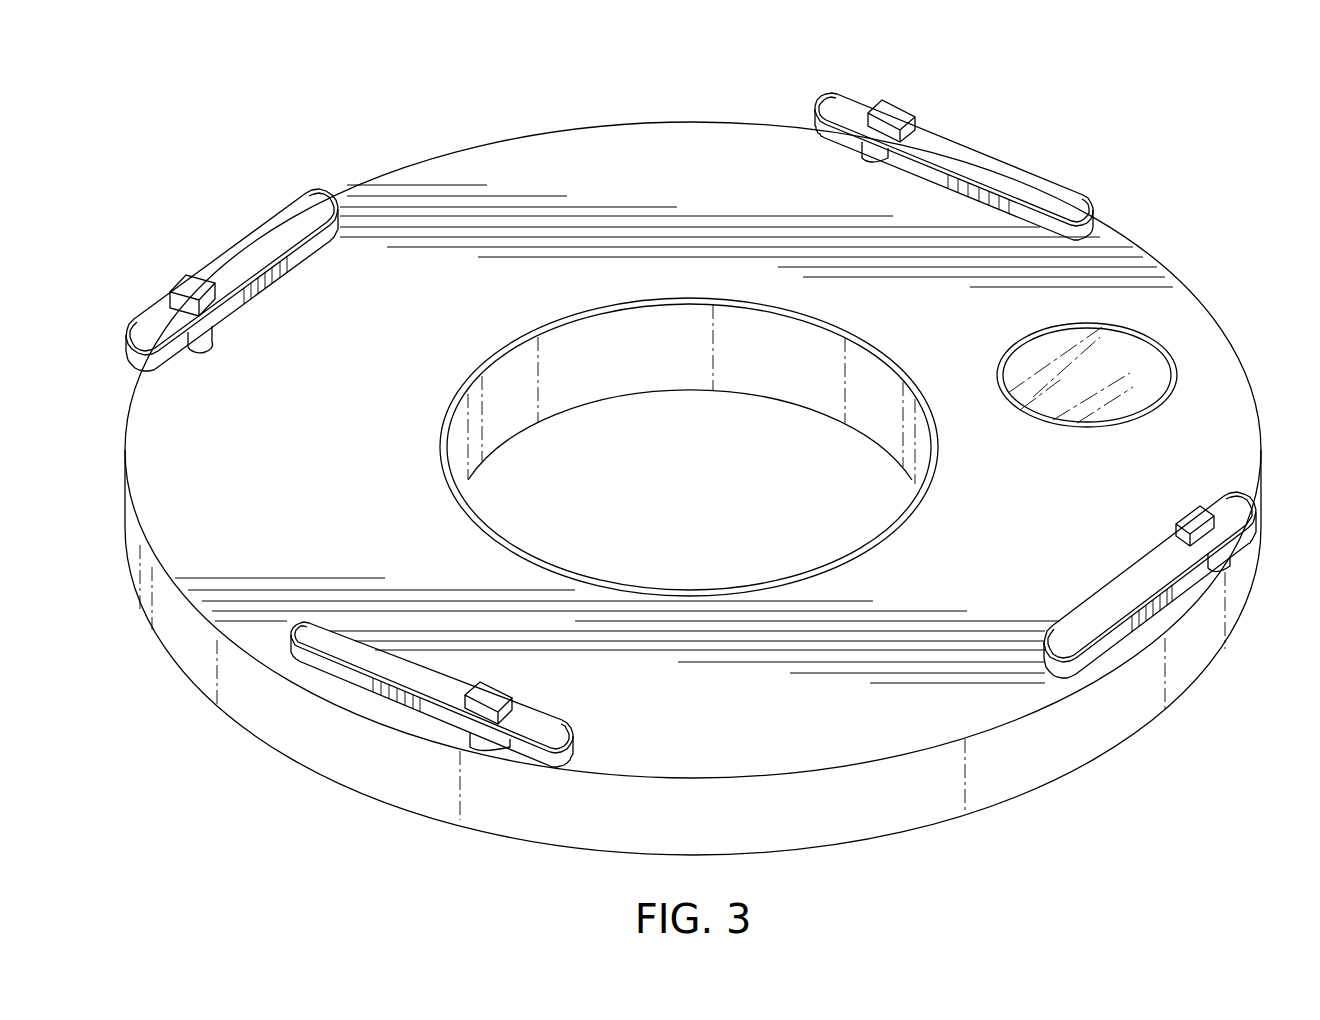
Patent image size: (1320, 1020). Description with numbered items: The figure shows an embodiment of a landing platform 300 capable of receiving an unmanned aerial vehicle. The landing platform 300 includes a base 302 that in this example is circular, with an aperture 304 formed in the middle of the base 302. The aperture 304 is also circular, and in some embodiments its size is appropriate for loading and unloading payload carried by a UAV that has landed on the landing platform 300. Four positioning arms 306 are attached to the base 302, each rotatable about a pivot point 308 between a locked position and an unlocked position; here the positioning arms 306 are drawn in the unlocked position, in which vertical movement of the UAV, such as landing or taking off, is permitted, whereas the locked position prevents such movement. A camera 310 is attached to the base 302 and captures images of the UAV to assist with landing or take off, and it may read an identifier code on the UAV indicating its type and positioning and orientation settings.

The landing platform 300 is at (975, 55).
The base 302 is at (457, 185).
The aperture 304 is at (680, 481).
The positioning arm 306 is at (236, 262).
The pivot point 308 is at (312, 203).
The camera 310 is at (1155, 372).